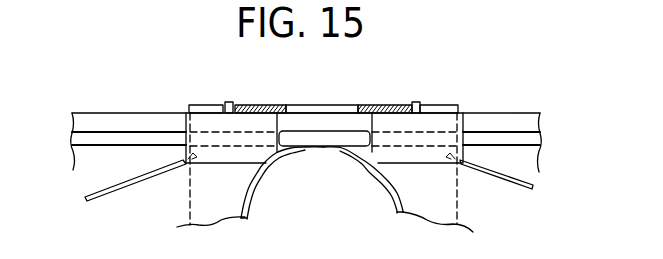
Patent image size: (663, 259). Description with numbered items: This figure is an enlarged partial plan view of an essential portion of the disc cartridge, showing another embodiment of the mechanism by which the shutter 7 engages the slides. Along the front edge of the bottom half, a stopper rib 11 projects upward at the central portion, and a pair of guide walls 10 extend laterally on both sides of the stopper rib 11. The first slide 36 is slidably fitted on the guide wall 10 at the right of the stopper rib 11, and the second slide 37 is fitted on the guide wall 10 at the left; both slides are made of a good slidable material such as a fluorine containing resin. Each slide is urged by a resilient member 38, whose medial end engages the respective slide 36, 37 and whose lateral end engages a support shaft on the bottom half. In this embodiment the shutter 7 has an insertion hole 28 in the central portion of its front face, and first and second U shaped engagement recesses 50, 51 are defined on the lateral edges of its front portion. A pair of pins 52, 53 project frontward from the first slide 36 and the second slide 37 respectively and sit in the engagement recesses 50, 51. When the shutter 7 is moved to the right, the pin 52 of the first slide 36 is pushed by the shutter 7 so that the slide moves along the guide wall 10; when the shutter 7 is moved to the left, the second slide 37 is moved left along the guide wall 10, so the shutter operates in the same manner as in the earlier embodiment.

The guide wall 10 is at (103, 131).
The stopper rib 11 is at (340, 131).
The shutter 7 is at (262, 104).
The insertion hole 28 is at (325, 105).
The first slide 36 is at (423, 163).
The second slide 37 is at (227, 163).
The resilient member 38 is at (113, 190).
The first U shaped engagement recess 50 is at (450, 104).
The second U shaped engagement recess 51 is at (188, 104).
The pin 52 is at (415, 102).
The pin 53 is at (228, 102).